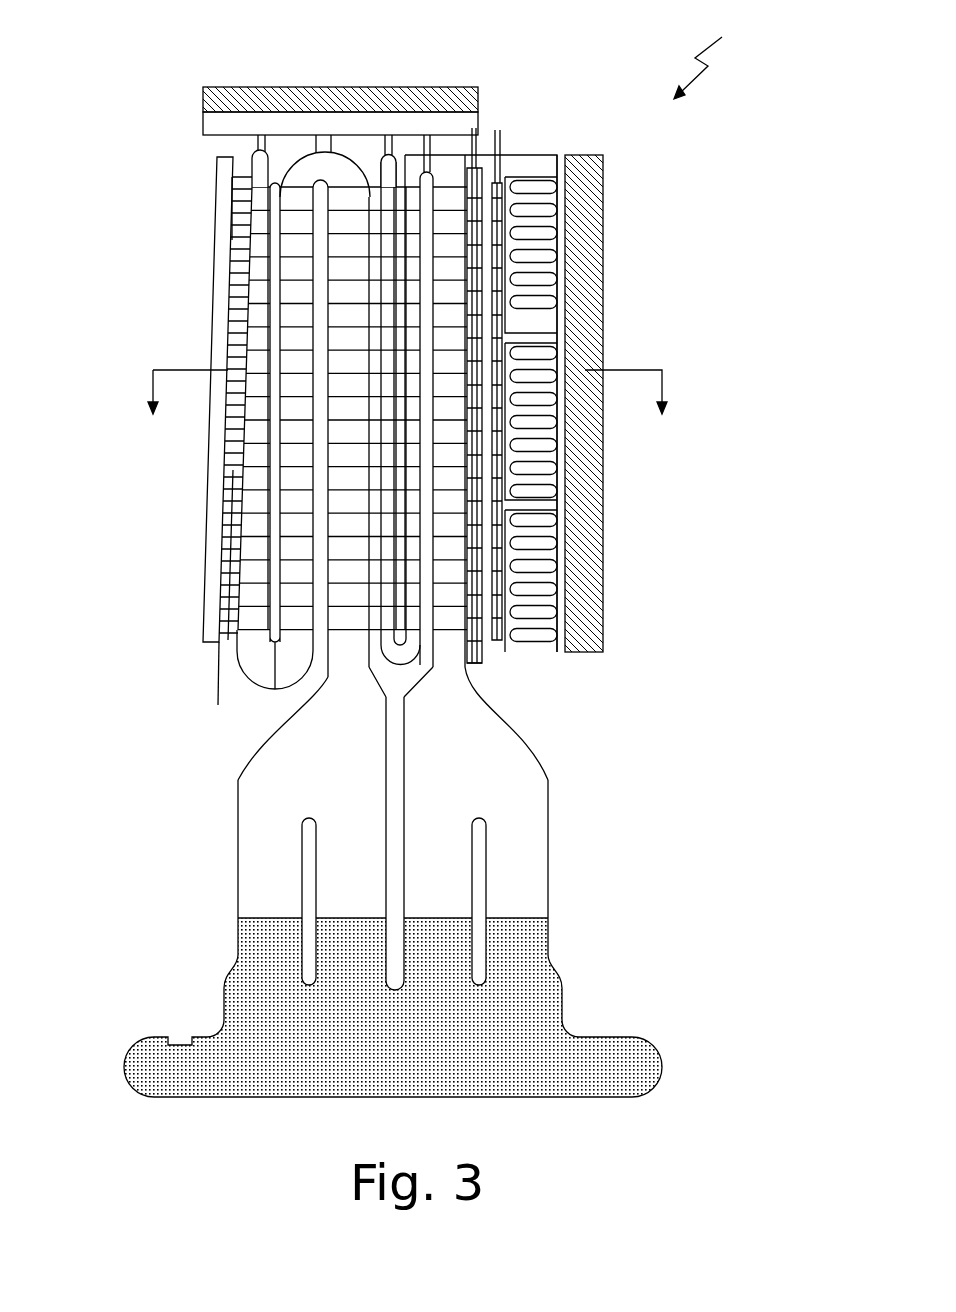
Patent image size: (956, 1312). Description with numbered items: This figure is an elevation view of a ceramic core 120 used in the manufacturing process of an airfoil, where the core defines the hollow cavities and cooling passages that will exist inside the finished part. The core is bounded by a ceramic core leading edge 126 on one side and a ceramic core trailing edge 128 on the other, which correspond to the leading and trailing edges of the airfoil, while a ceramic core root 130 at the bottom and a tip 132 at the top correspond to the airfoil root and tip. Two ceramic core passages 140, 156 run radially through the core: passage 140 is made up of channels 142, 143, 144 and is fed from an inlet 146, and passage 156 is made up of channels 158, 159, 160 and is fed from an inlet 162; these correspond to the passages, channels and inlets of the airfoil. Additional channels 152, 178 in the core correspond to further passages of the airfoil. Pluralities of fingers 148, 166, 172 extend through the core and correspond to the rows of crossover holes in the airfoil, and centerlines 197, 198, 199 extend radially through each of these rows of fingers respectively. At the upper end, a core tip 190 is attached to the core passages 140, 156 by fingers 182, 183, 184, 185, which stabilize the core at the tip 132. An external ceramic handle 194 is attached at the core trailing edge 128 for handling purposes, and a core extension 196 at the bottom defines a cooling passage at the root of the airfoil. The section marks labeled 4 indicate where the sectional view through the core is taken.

The ceramic core 120 is at (720, 55).
The ceramic core leading edge 126 is at (215, 245).
The ceramic core trailing edge 128 is at (560, 266).
The ceramic core root 130 is at (480, 708).
The tip 132 is at (221, 156).
The ceramic core passage 140 is at (305, 175).
The channel 142 is at (372, 663).
The channel 143 is at (318, 663).
The channel 144 is at (275, 663).
The inlet 146 is at (372, 713).
The plurality of fingers 148 is at (222, 601).
The channel 152 is at (222, 316).
The ceramic core passage 156 is at (450, 177).
The channel 158 is at (463, 611).
The channel 159 is at (413, 645).
The channel 160 is at (397, 653).
The inlet 162 is at (470, 713).
The plurality of fingers 166 is at (477, 176).
The plurality of fingers 172 is at (500, 193).
The channel 178 is at (485, 643).
The finger 182 is at (262, 143).
The finger 183 is at (313, 143).
The finger 184 is at (380, 146).
The finger 185 is at (423, 147).
The core tip 190 is at (352, 87).
The external ceramic handle 194 is at (603, 492).
The core extension 196 is at (513, 952).
The centerline 197 is at (218, 663).
The centerline 198 is at (470, 670).
The centerline 199 is at (500, 142).
The section line 4- 4 is at (407, 410).